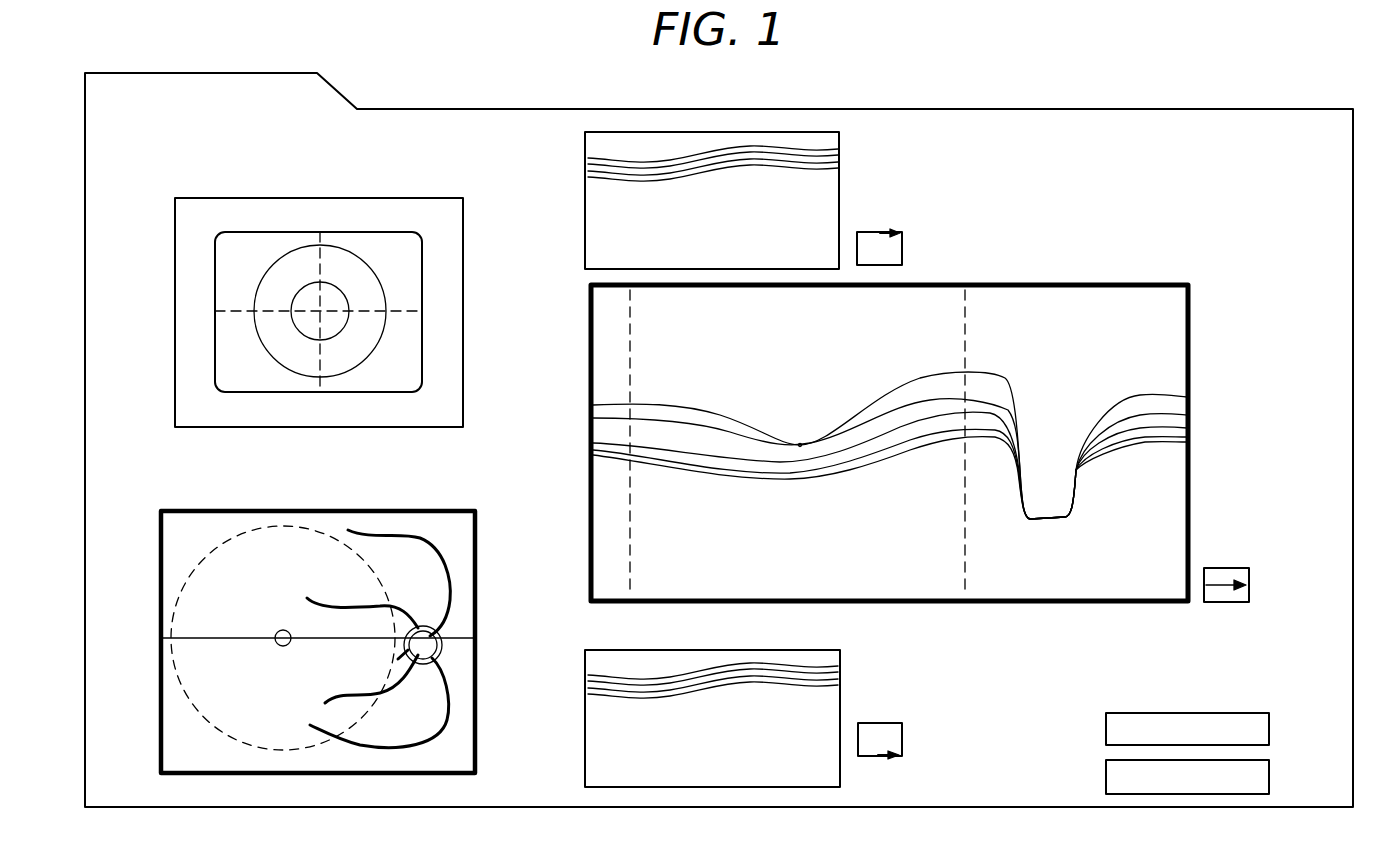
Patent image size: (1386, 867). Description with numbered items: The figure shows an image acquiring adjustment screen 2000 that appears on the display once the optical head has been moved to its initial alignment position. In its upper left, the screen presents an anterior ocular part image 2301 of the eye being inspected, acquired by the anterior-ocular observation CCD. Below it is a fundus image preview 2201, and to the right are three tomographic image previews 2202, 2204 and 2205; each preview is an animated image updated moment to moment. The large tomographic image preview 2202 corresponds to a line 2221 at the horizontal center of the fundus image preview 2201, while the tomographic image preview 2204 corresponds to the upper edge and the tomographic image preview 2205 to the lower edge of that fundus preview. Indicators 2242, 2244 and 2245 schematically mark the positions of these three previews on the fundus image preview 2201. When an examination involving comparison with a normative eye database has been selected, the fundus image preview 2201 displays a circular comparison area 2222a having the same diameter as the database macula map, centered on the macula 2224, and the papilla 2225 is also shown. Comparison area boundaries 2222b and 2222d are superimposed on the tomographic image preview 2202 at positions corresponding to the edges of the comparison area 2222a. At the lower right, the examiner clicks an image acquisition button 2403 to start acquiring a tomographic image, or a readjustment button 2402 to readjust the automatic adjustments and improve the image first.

The image acquiring adjustment screen 2000 is at (810, 105).
The anterior ocular part image 2301 is at (390, 194).
The tomographic image preview 2204 is at (584, 197).
The indicator 2244 is at (903, 245).
The tomographic image preview 2202 is at (1112, 281).
The macula 2224 is at (283, 629).
The comparison area boundary 2222b is at (632, 555).
The comparison area boundary 2222d is at (967, 553).
The indicator 2242 is at (1250, 584).
The fundus image preview 2201 is at (390, 506).
The line 2221 is at (233, 641).
The comparison area 2222a is at (196, 706).
The papilla 2225 is at (432, 630).
The tomographic image preview 2205 is at (584, 720).
The indicator 2245 is at (905, 738).
The image acquisition button 2403 is at (1272, 727).
The readjustment button 2402 is at (1272, 776).